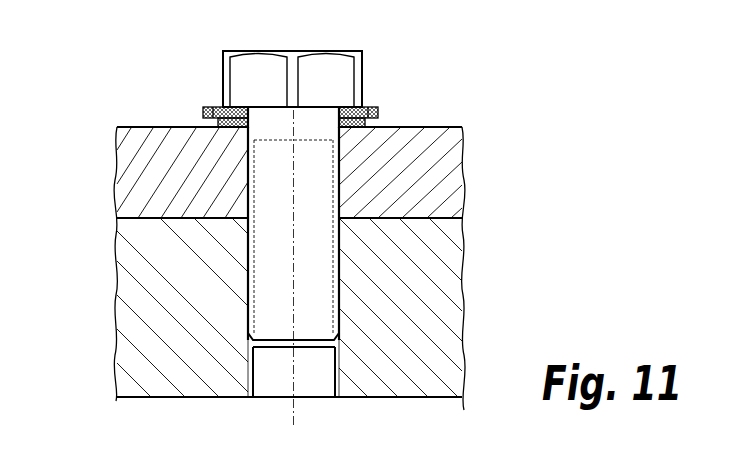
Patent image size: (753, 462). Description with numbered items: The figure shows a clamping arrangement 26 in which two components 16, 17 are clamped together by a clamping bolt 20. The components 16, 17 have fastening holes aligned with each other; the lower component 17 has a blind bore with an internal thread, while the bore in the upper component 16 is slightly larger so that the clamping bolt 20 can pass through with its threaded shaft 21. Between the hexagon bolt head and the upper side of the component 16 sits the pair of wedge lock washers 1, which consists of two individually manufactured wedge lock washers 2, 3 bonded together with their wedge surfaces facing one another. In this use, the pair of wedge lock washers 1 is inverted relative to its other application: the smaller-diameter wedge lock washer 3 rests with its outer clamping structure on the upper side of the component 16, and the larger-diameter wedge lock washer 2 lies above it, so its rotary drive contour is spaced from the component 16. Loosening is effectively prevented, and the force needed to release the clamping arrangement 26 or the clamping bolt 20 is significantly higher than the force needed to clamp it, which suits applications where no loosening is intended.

The pair of wedge lock washers 1 is at (197, 107).
The wedge lock washer 2 is at (211, 102).
The wedge lock washer 3 is at (214, 121).
The component 16 is at (411, 184).
The component 17 is at (412, 306).
The clamping bolt 20 is at (374, 73).
The threaded shaft 21 is at (303, 301).
The clamping arrangement 26 is at (496, 187).